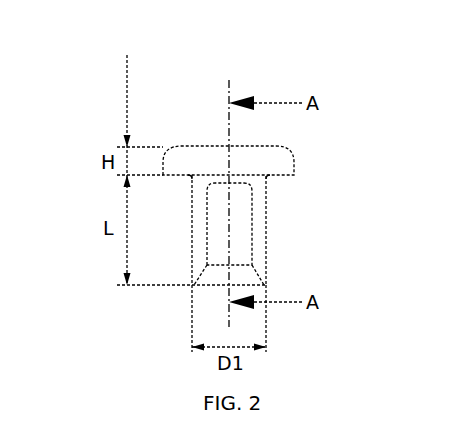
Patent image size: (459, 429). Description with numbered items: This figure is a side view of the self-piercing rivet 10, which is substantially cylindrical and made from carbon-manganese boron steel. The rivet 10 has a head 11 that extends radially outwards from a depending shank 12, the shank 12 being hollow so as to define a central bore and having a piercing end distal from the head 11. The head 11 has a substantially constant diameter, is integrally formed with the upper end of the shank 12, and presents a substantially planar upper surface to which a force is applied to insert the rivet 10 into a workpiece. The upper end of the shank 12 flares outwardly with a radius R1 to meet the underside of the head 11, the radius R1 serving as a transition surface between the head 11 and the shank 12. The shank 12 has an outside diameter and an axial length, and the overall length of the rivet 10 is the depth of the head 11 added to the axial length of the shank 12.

The self-piercing rivet 10 is at (211, 189).
The head 11 is at (294, 165).
The shank 12 is at (267, 231).
The radius R1 is at (268, 178).